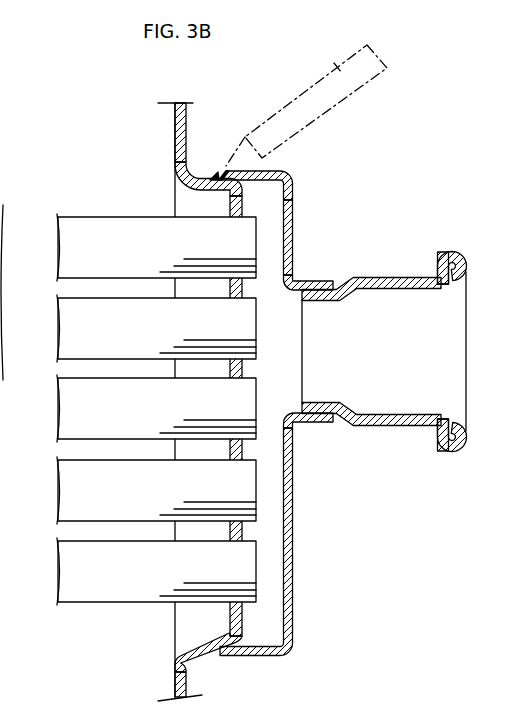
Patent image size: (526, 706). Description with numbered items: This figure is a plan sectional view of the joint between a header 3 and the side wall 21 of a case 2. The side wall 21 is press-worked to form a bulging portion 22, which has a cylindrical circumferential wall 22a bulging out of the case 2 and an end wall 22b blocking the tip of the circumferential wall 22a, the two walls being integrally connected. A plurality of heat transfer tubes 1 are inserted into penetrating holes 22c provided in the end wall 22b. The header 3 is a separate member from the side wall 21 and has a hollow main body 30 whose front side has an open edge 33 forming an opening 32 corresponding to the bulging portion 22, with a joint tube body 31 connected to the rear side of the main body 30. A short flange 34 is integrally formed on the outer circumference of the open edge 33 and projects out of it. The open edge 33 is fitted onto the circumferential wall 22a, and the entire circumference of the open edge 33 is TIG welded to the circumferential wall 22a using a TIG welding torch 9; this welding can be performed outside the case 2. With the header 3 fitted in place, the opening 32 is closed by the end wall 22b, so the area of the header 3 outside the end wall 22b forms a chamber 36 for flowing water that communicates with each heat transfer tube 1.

The heat transfer tube 1 is at (63, 252).
The case 2 is at (173, 142).
The header 3 is at (295, 184).
The TIG welding torch 9 is at (320, 58).
The side wall 21 is at (184, 121).
The bulging portion 22 is at (243, 207).
The circumferential wall 22a is at (203, 187).
The end wall 22b is at (238, 371).
The penetrating hole 22c is at (248, 602).
The main body 30 is at (265, 174).
The joint tube body 31 is at (392, 282).
The opening 32 is at (202, 618).
The open edge 33 is at (221, 169).
The flange 34 is at (210, 170).
The chamber 36 is at (270, 241).